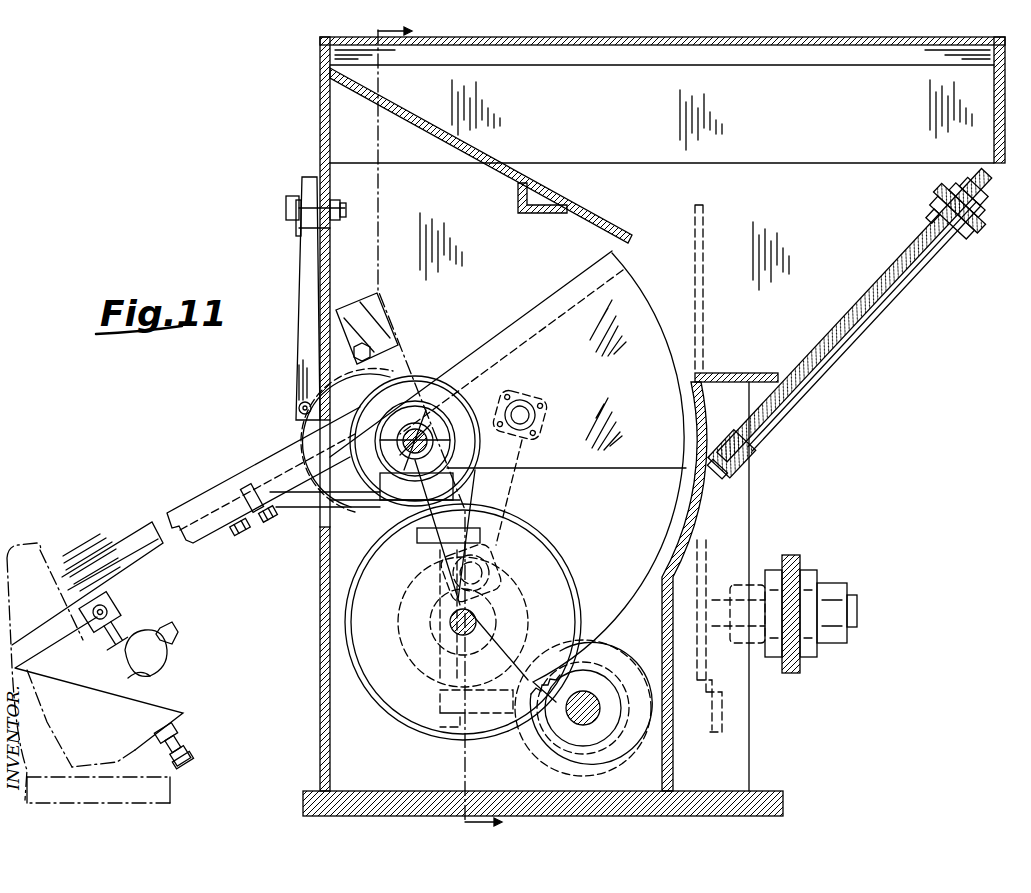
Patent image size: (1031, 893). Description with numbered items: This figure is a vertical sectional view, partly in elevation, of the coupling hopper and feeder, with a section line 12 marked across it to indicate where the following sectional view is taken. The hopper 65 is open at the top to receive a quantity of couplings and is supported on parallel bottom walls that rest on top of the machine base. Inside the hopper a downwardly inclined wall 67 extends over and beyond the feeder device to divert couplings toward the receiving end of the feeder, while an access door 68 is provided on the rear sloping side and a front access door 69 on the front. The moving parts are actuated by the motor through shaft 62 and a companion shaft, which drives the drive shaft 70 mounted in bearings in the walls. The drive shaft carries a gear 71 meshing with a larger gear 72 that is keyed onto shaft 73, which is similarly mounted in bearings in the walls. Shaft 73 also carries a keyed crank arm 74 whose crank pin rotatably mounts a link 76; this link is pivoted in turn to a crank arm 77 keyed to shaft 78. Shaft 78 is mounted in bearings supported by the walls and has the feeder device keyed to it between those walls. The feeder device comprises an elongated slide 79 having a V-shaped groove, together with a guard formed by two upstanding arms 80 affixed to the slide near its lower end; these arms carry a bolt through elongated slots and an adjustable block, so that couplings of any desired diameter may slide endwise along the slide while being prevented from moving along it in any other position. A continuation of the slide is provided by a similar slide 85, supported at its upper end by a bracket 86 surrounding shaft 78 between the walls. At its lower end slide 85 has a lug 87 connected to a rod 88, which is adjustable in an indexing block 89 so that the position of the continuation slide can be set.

The section line 12— 12 is at (453, 425).
The shaft 62 is at (858, 600).
The hopper 65 is at (846, 120).
The downwardly inclined wall 67 is at (437, 130).
The access door 68 is at (830, 352).
The front access door 69 is at (302, 262).
The drive shaft 70 is at (575, 718).
The gear 71 is at (615, 666).
The larger gear 72 is at (552, 588).
The shaft 73 is at (450, 626).
The crank arm 74 is at (491, 573).
The link 76 is at (508, 488).
The crank arm 77 is at (500, 390).
The shaft 78 is at (432, 428).
The elongated slide 79 is at (531, 316).
The upstanding arms 80 is at (390, 367).
The slide 85 is at (208, 490).
The bracket 86 is at (302, 497).
The lug 87 is at (110, 597).
The rod 88 is at (120, 611).
The indexing block 89 is at (140, 668).